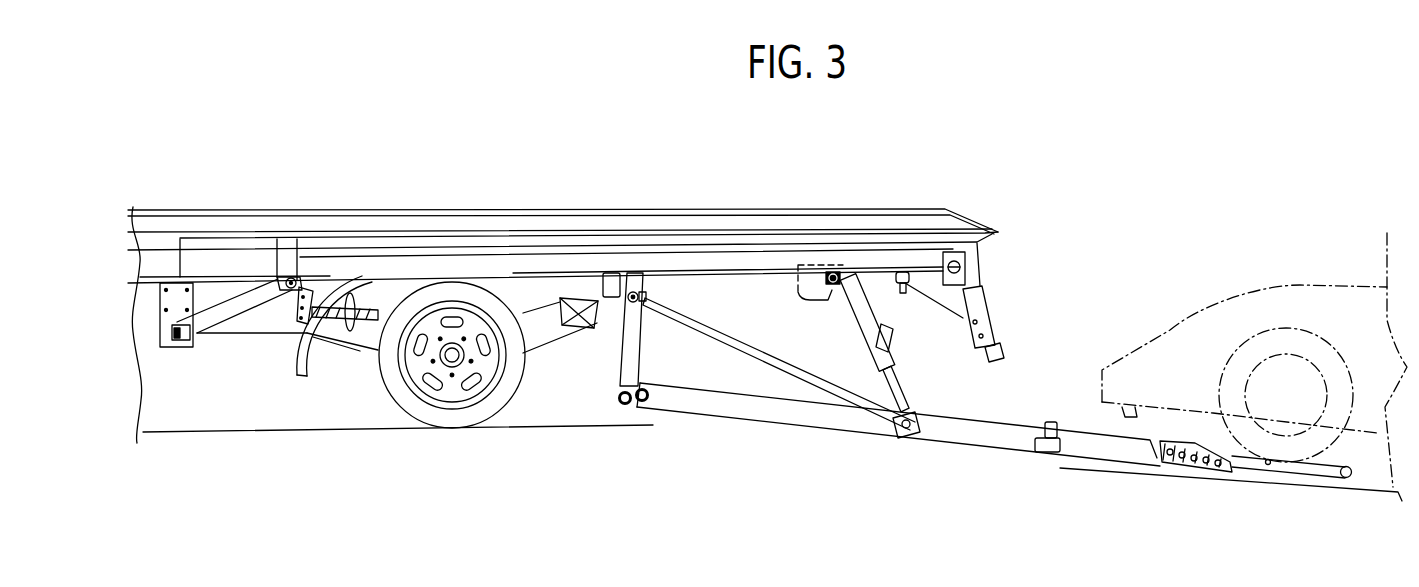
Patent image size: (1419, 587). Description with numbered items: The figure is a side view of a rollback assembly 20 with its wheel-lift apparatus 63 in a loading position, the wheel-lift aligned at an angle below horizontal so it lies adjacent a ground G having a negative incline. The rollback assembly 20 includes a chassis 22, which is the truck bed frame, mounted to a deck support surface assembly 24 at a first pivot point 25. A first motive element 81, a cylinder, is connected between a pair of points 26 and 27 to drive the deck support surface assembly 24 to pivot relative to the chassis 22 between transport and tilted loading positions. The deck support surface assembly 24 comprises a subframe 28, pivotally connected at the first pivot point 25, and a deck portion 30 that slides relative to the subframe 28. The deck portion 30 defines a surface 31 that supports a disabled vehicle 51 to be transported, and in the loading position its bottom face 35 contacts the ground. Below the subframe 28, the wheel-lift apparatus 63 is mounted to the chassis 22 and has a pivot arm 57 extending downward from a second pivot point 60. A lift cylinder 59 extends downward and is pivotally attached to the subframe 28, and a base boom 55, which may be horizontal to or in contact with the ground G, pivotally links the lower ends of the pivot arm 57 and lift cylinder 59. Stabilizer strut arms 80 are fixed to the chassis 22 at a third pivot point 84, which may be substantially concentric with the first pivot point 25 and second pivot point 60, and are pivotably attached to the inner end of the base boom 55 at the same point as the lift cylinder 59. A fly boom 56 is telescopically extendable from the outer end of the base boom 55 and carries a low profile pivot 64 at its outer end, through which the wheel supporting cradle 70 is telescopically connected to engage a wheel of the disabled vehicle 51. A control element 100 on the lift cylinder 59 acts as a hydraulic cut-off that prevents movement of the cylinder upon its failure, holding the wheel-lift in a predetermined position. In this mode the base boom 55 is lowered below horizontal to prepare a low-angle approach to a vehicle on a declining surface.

The rollback assembly 20 is at (370, 162).
The chassis 22 is at (252, 335).
The deck support surface assembly 24 is at (476, 203).
The first pivot point 25 is at (650, 292).
The connection point 26 is at (293, 277).
The connection point 27 is at (182, 350).
The subframe 28 is at (545, 246).
The deck portion 30 is at (735, 208).
The surface 31 is at (844, 203).
The bottom face 35 is at (984, 263).
The disabled vehicle 51 is at (1300, 285).
The base boom 55 is at (757, 423).
The fly boom 56 is at (1075, 458).
The pivot arm 57 is at (622, 340).
The lift cylinder 59 is at (862, 335).
The second pivot point 60 is at (690, 316).
The wheel-lift apparatus 63 is at (662, 414).
The low profile pivot 64 is at (1157, 473).
The wheel supporting cradle 70 is at (1295, 489).
The stabilizer strut arms 80 is at (745, 356).
The first motive element 81 is at (240, 303).
The third pivot point 84 is at (643, 330).
The control element 100 is at (913, 317).
The ground G is at (262, 433).